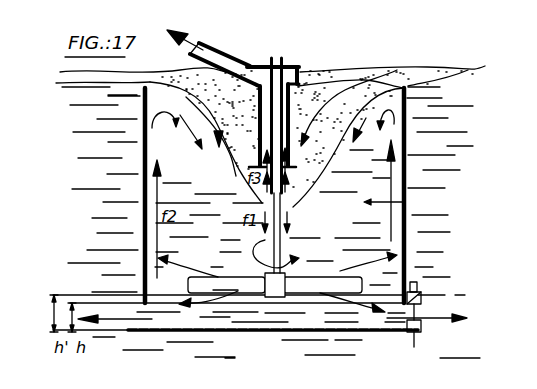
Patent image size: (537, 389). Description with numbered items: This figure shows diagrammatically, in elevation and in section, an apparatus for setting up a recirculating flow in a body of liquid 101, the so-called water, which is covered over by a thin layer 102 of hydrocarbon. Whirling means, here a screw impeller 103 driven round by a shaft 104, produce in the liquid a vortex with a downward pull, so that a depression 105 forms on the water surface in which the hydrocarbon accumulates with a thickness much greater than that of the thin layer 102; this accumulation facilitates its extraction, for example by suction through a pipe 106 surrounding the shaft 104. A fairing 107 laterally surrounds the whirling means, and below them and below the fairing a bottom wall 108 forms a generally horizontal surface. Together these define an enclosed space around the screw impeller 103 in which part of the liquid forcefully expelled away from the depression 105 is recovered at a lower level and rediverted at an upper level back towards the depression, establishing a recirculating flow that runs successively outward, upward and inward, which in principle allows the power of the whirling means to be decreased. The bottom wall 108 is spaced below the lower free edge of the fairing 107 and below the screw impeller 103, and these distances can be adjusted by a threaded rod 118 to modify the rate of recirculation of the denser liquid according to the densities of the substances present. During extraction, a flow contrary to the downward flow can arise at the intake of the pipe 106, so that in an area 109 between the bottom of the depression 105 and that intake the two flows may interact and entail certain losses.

The body of liquid 101 is at (435, 130).
The thin layer 102 is at (422, 72).
The screw impeller 103 is at (256, 287).
The shaft 104 is at (277, 62).
The depression 105 is at (360, 97).
The pipe 106 is at (293, 107).
The fairing 107 is at (405, 208).
The bottom wall 108 is at (368, 328).
The area 109 is at (284, 203).
The threaded rod 118 is at (422, 298).